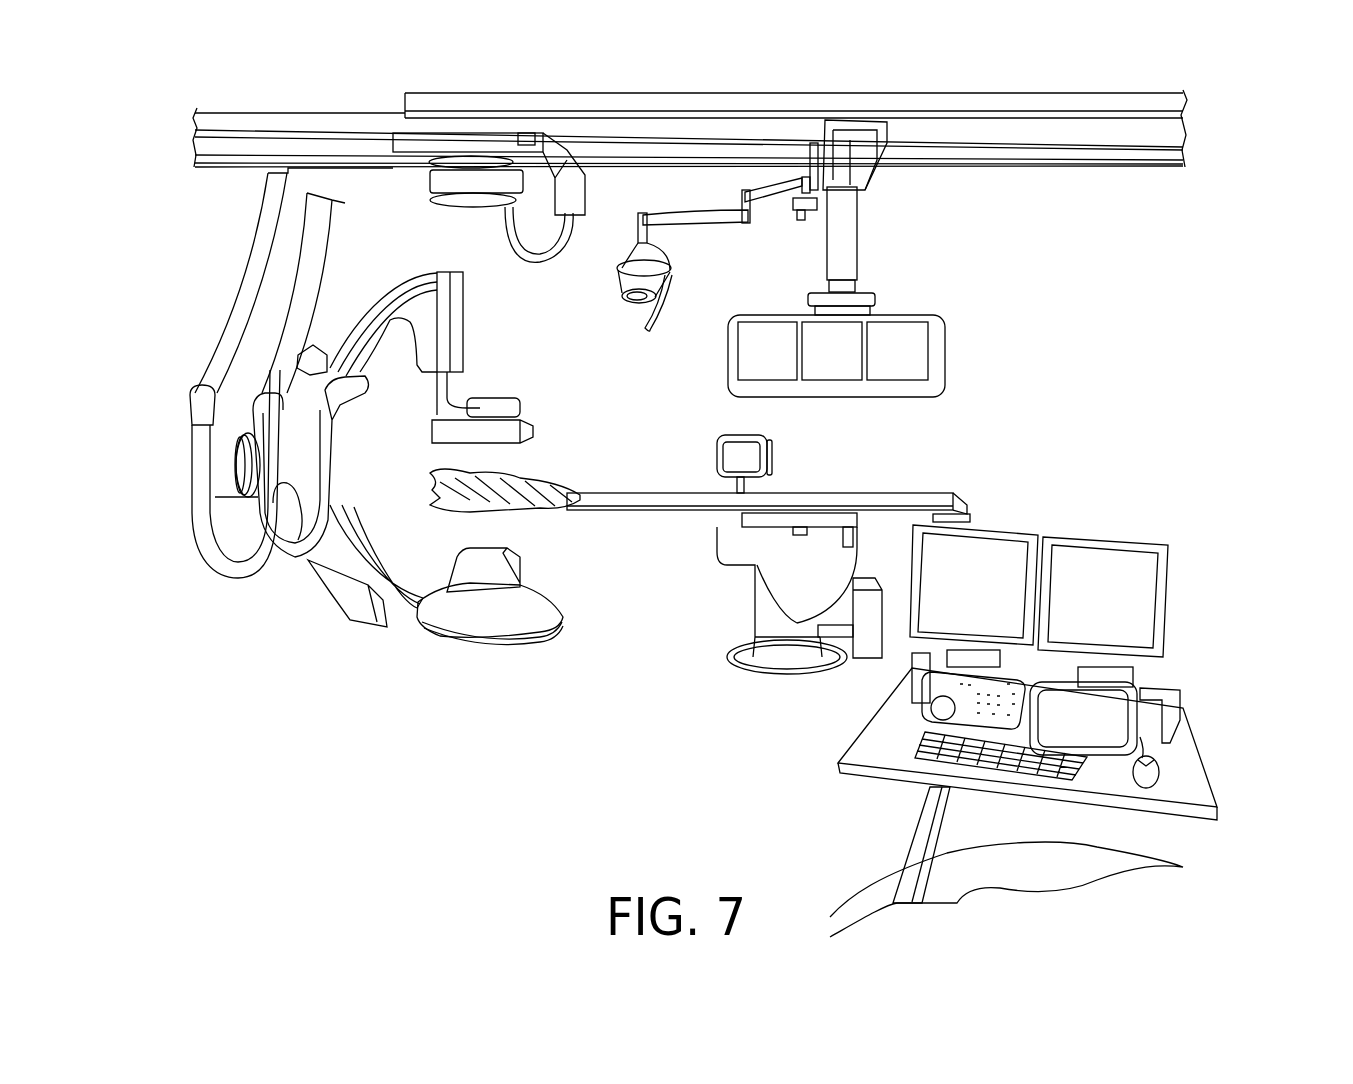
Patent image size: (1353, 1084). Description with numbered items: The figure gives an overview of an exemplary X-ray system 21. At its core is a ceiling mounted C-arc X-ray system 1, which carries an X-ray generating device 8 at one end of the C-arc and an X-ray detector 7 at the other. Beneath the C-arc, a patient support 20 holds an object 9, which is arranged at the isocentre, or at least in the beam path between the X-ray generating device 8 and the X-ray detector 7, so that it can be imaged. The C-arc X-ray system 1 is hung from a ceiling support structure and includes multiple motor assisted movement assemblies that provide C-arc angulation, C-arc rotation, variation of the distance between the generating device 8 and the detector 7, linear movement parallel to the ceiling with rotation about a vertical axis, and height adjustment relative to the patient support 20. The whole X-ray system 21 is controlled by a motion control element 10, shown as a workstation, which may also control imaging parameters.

The X-ray system 21 is at (1170, 259).
The ceiling mounted C-arc X-ray system 1 is at (308, 507).
The X-ray detector 7 is at (510, 432).
The X-ray generating device 8 is at (495, 622).
The object 9 is at (483, 490).
The patient support 20 is at (935, 503).
The motion control element 10 is at (1182, 670).